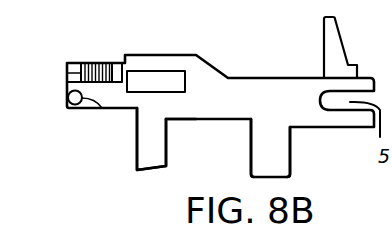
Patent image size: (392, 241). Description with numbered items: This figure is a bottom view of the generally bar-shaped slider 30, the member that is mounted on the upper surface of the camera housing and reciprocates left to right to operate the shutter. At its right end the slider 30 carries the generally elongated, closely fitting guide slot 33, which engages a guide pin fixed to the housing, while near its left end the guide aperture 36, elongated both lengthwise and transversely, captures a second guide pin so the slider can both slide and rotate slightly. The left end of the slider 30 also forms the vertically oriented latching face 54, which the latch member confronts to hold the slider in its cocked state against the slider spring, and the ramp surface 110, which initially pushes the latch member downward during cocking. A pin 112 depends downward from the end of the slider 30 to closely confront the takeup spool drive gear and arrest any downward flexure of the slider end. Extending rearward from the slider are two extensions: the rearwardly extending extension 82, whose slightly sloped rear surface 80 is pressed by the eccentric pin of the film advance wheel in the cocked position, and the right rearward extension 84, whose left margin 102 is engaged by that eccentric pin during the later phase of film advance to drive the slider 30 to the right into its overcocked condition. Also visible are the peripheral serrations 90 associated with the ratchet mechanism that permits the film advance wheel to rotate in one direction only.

The slider 30 is at (278, 115).
The ramp surface 110 is at (97, 62).
The latching face 54 is at (67, 73).
The guide aperture 36 is at (173, 77).
The pin 112 is at (102, 108).
The peripheral serrations 90 is at (340, 43).
The guide slot 33 is at (379, 134).
The rearwardly extending extension 82 is at (150, 150).
The rear surface 80 is at (151, 167).
The left margin 102 is at (253, 147).
The right rearward extension 84 is at (289, 150).